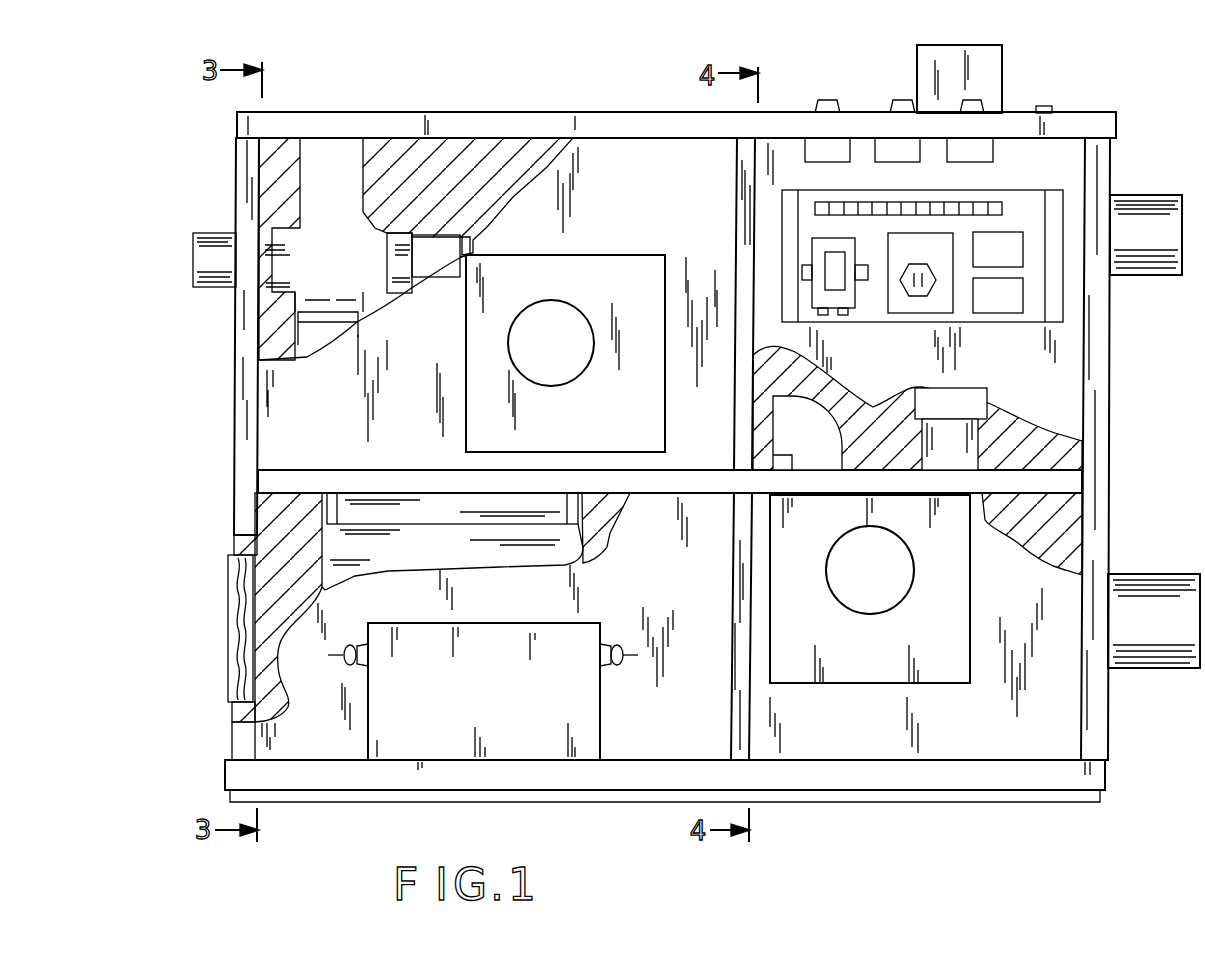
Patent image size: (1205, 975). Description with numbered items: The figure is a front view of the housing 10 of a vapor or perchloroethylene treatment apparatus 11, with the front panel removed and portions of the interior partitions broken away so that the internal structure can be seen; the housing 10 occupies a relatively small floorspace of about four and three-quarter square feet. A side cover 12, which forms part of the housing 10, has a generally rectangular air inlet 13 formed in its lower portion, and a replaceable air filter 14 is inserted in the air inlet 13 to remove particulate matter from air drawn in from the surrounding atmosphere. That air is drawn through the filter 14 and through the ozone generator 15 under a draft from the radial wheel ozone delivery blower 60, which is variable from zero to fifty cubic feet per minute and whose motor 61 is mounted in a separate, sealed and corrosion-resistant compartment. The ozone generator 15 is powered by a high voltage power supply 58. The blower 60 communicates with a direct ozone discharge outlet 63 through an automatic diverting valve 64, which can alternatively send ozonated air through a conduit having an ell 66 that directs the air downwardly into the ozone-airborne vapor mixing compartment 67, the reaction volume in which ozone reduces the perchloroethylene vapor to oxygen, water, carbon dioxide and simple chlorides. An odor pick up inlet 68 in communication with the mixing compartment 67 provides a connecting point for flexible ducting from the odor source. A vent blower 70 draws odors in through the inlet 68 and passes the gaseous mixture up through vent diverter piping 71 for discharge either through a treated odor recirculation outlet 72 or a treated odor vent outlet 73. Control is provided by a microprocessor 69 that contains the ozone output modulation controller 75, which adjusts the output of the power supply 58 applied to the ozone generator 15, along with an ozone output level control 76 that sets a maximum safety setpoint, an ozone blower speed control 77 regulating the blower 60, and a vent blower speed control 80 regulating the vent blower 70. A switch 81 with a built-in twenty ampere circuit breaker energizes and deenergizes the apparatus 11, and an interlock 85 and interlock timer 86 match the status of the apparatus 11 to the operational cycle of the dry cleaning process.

The housing 10 is at (1112, 345).
The treatment apparatus 11 is at (1126, 458).
The side cover 12 is at (236, 393).
The air inlet 13 is at (231, 642).
The air filter 14 is at (259, 584).
The ozone generator 15 is at (563, 553).
The high voltage power supply 58 is at (462, 697).
The ozone delivery blower 60 is at (535, 358).
The motor 61 is at (654, 209).
The direct ozone discharge outlet 63 is at (224, 268).
The automatic diverting valve 64 is at (352, 228).
The ell 66 is at (828, 420).
The mixing compartment 67 is at (1032, 534).
The odor pick up inlet 68 is at (1134, 632).
The microprocessor 69 is at (962, 318).
The vent blower 70 is at (854, 585).
The vent diverter piping 71 is at (950, 467).
The treated odor recirculation outlet 72 is at (1128, 212).
The treated odor vent outlet 73 is at (953, 78).
The ozone output modulation controller 75 is at (920, 273).
The ozone output level control 76 is at (990, 142).
The ozone blower speed control 77 is at (825, 148).
The vent blower speed control 80 is at (893, 152).
The switch 81 is at (1053, 108).
The interlock 85 is at (998, 249).
The interlock timer 86 is at (998, 295).